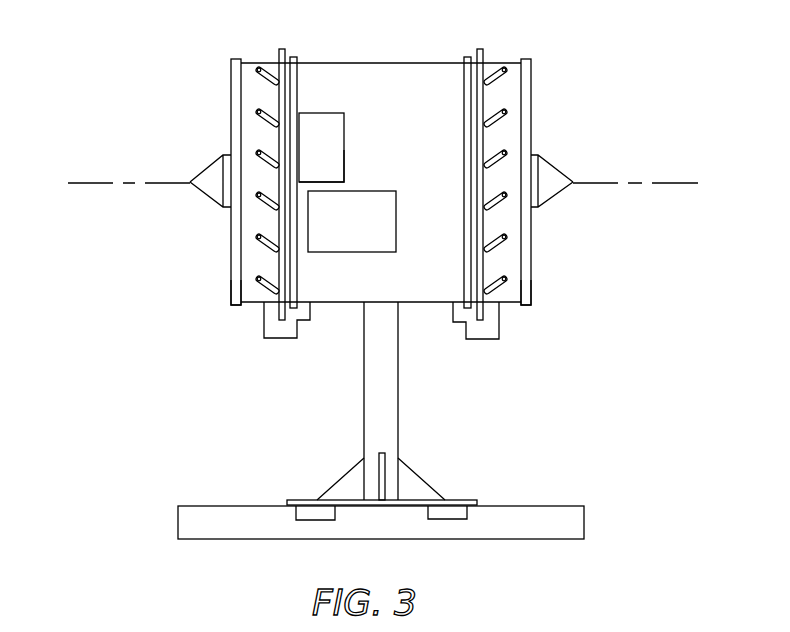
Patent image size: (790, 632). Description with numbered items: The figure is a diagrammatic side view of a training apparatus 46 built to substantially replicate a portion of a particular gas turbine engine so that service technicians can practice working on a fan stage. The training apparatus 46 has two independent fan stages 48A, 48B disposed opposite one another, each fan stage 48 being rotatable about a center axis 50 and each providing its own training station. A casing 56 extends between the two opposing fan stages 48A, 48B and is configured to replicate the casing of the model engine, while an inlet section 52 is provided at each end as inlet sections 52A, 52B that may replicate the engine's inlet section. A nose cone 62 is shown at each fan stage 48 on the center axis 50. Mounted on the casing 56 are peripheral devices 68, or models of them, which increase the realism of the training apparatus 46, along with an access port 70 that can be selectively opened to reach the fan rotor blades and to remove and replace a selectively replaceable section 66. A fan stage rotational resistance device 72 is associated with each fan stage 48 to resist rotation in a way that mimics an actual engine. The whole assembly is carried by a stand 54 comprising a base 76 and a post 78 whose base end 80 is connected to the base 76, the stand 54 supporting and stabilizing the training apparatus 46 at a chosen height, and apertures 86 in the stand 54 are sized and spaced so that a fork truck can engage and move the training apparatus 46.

The training apparatus 46 is at (198, 48).
The fan stage 48 is at (389, 172).
The first fan stage 48A is at (220, 118).
The second fan stage 48B is at (542, 97).
The center axis 50 is at (690, 187).
The inlet section 52 is at (384, 300).
The first inlet section 52A is at (230, 285).
The second inlet section 52B is at (532, 285).
The stand 54 is at (448, 418).
The casing 56 is at (407, 53).
The nose cone 62 is at (212, 190).
The selectively replaceable section 66 is at (327, 133).
The peripheral devices 68 is at (367, 236).
The access port 70 is at (346, 160).
The fan stage rotational resistance device 72 is at (253, 333).
The base 76 is at (573, 523).
The post 78 is at (380, 387).
The base end 80 is at (408, 498).
The apertures 86 is at (443, 515).